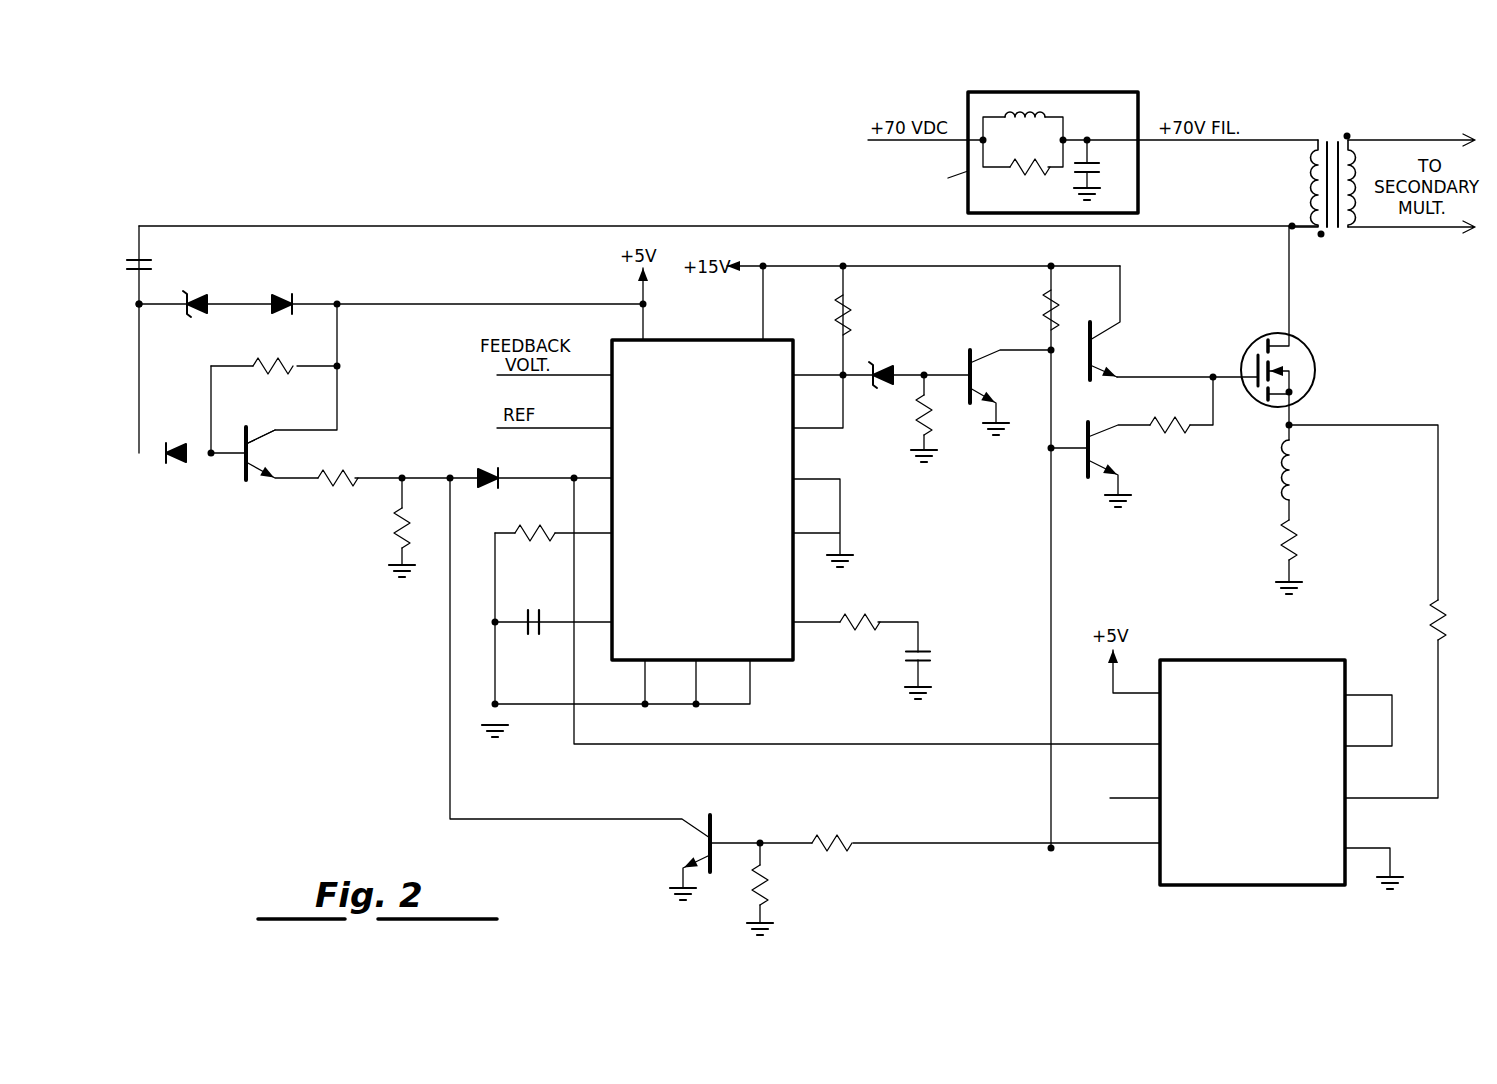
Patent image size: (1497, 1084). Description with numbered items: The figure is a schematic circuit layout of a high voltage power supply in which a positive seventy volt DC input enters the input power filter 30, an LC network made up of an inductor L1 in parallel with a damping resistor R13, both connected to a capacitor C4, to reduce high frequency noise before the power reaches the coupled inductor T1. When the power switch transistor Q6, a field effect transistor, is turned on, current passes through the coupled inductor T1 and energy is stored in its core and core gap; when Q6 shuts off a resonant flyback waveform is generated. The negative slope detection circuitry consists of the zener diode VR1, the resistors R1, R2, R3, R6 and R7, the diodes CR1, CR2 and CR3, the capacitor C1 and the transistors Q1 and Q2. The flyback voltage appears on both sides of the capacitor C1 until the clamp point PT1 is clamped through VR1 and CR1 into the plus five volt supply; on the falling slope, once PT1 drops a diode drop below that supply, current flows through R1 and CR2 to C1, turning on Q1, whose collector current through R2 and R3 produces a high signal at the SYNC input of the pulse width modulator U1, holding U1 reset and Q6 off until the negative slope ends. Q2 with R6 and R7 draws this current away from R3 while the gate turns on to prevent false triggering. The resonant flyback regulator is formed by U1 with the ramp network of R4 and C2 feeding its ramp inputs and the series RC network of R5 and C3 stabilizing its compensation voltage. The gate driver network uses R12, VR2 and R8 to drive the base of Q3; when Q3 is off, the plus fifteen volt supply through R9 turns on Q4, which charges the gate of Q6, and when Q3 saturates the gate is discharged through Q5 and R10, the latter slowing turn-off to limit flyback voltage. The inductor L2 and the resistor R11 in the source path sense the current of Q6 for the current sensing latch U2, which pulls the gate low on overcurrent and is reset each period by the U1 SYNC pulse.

The input power filter 30 is at (1025, 152).
The Point 1 PT1 is at (119, 306).
The capacitor C1 is at (151, 262).
The zener diode VR1 is at (201, 292).
The diode CR1 is at (282, 289).
The resistor R1 is at (273, 356).
The diode CR2 is at (172, 442).
The transistor Q1 is at (282, 454).
The resistor R2 is at (338, 487).
The resistor R3 is at (388, 521).
The diode CR3 is at (487, 466).
The resistor R4 is at (535, 520).
The capacitor C2 is at (531, 612).
The pulse width modulator U1 is at (708, 515).
The resistor R5 is at (860, 611).
The capacitor C3 is at (932, 657).
The resistor R12 is at (1159, 467).
The zener diode VR2 is at (887, 366).
The resistor R8 is at (910, 412).
The transistor Q3 is at (1010, 386).
The resistor R9 is at (1035, 310).
The transistor Q4 is at (1118, 323).
The transistor Q5 is at (1119, 458).
The resistor R10 is at (1170, 411).
The power switch transistor Q6 is at (1296, 370).
The inductor L2 is at (1305, 470).
The resistor R11 is at (1309, 540).
The inductor L1 is at (1025, 127).
The resistor R13 is at (1026, 176).
The capacitor C4 is at (1099, 170).
The coupled inductor T1 is at (1383, 171).
The current sensing latch circuit U2 is at (1255, 772).
The transistor Q2 is at (680, 851).
The resistor R6 is at (832, 833).
The resistor R7 is at (776, 885).